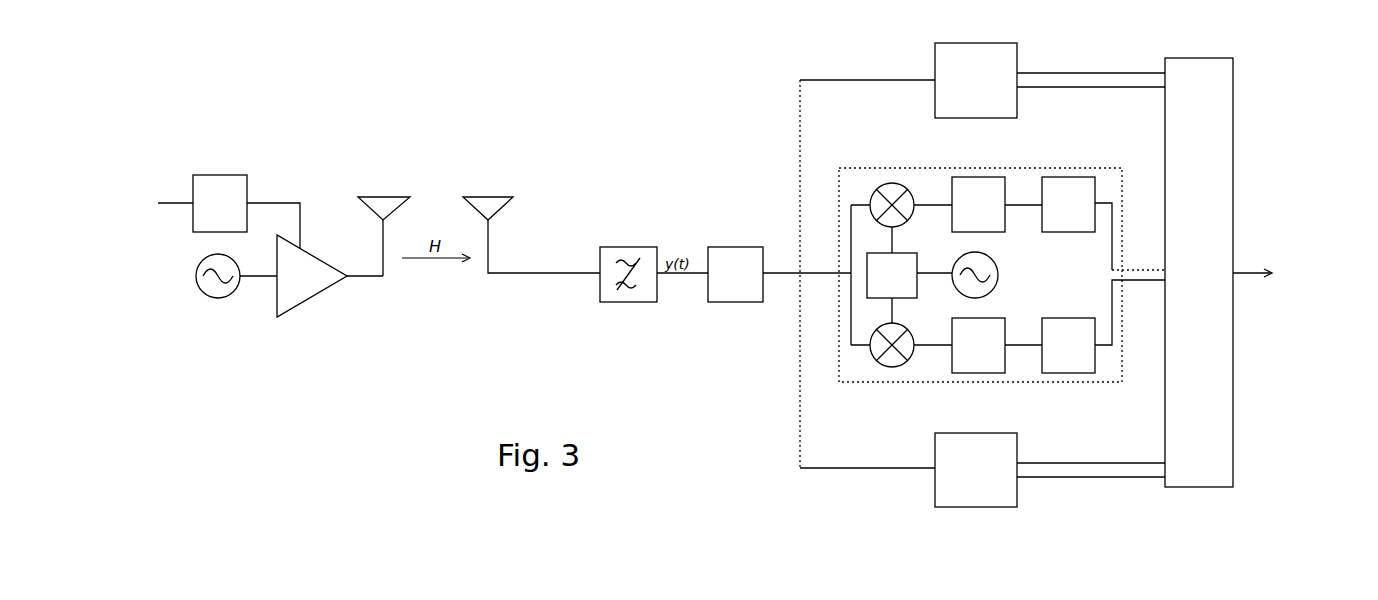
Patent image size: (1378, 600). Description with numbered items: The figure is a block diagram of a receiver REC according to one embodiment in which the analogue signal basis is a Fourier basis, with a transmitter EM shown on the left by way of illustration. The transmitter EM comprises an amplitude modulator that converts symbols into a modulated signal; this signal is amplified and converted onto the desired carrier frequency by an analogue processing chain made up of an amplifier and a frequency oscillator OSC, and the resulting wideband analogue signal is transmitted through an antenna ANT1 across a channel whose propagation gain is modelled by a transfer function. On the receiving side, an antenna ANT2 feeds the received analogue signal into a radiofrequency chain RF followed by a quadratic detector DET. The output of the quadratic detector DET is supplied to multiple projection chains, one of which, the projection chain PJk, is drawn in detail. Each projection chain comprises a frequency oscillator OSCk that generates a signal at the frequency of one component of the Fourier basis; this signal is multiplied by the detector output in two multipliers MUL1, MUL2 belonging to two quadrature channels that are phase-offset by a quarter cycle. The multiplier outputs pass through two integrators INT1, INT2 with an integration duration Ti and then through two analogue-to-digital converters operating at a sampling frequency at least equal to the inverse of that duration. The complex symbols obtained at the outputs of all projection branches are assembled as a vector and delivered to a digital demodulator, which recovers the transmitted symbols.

The transmitter EM is at (183, 137).
The frequency oscillator OSC is at (197, 287).
The antenna ANT1 is at (377, 192).
The receive antenna ANT2 is at (490, 195).
The radiofrequency chain RF is at (632, 247).
The quadratic detector DET is at (737, 247).
The receiver REC is at (1250, 55).
The projection chain PJk is at (1072, 167).
The first multiplier MUL1 is at (878, 187).
The second multiplier MUL2 is at (898, 368).
The first integrator INT1 is at (972, 177).
The second integrator INT2 is at (983, 375).
The frequency oscillator OSCk is at (1001, 278).